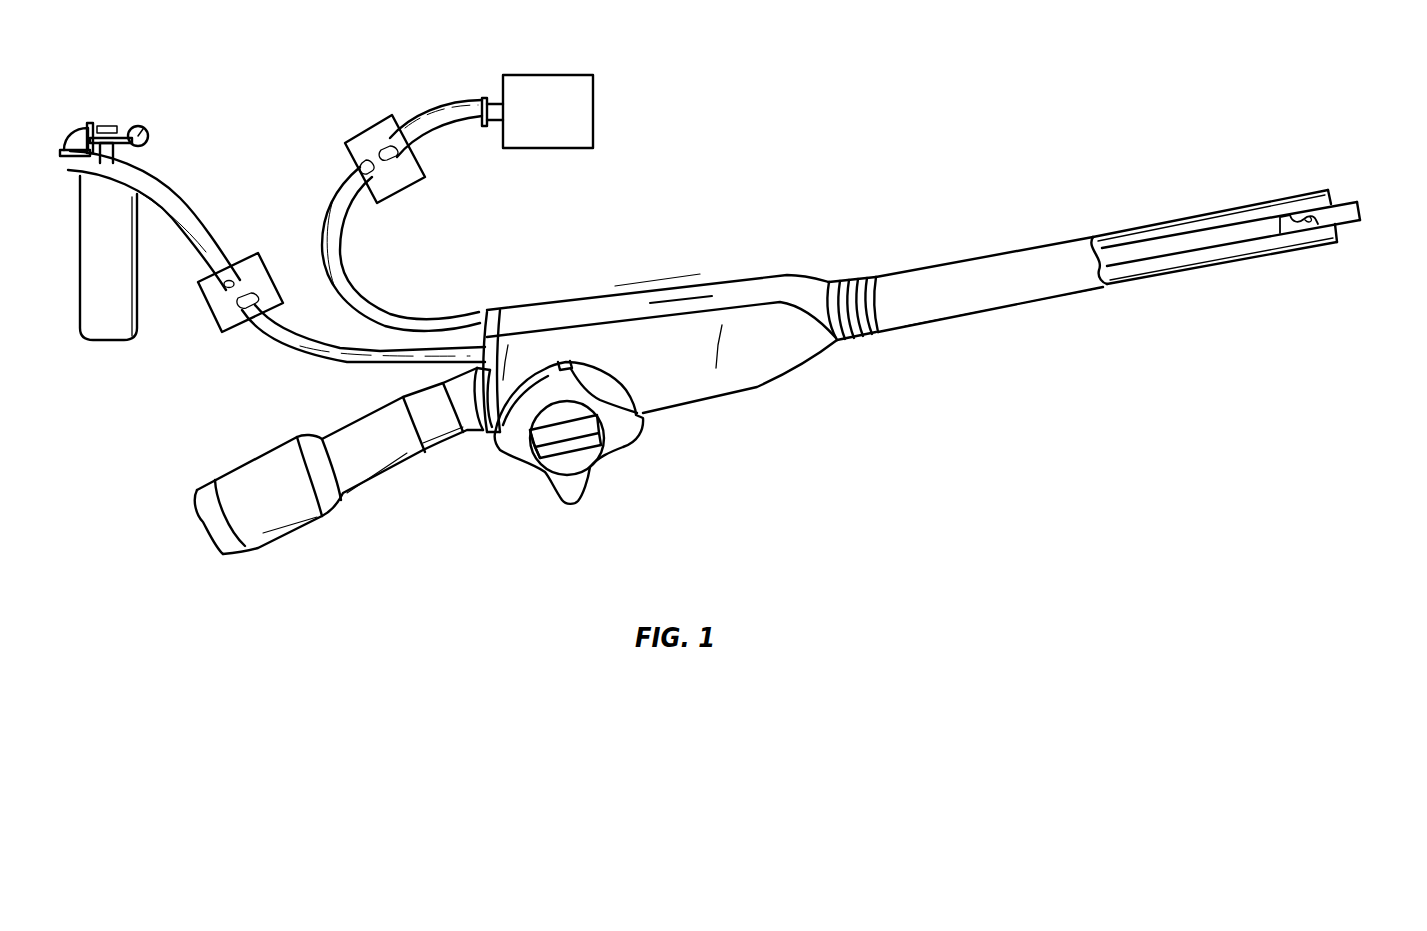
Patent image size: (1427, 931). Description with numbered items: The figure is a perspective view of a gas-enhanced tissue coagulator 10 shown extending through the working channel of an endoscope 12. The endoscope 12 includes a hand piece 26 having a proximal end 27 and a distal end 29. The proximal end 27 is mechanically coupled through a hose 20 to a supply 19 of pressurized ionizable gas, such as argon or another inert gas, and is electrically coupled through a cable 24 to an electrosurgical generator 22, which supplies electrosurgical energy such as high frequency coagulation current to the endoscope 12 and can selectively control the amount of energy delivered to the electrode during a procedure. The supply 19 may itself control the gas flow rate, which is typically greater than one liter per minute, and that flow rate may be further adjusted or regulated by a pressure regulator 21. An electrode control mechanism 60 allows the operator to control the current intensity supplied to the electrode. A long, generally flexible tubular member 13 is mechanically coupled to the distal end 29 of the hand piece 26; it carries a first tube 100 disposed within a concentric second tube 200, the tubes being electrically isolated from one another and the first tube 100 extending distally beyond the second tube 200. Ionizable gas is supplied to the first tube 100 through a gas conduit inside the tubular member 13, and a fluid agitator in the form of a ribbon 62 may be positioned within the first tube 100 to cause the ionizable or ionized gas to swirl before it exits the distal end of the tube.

The gas-enhanced tissue coagulator 10 is at (804, 341).
The endoscope 12 is at (554, 395).
The tubular member 13 is at (925, 303).
The supply of pressurized ionizable gas 19 is at (107, 343).
The hose 20 is at (194, 202).
The pressure regulator 21 is at (210, 313).
The electrosurgical generator 22 is at (596, 108).
The cable 24 is at (342, 238).
The hand piece 26 is at (668, 298).
The proximal end 27 is at (487, 310).
The distal end 29 is at (843, 283).
The electrode control mechanism 60 is at (372, 140).
The ribbon 62 is at (1300, 228).
The first tube 100 is at (1178, 252).
The second tube 200 is at (1234, 218).